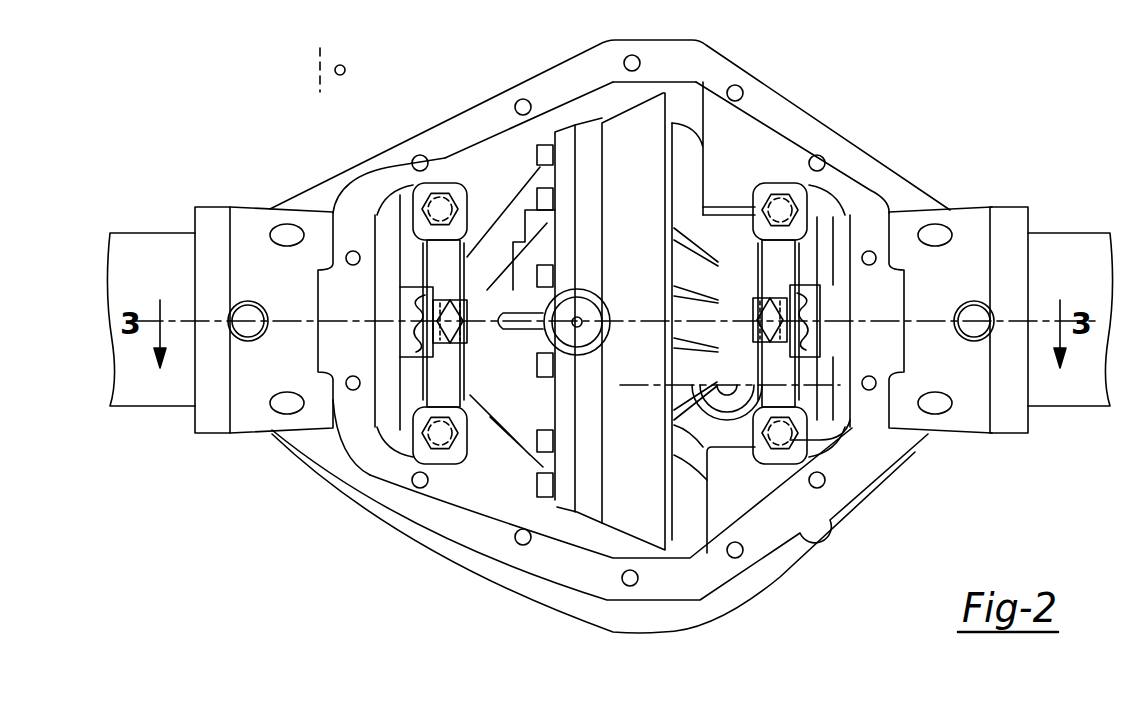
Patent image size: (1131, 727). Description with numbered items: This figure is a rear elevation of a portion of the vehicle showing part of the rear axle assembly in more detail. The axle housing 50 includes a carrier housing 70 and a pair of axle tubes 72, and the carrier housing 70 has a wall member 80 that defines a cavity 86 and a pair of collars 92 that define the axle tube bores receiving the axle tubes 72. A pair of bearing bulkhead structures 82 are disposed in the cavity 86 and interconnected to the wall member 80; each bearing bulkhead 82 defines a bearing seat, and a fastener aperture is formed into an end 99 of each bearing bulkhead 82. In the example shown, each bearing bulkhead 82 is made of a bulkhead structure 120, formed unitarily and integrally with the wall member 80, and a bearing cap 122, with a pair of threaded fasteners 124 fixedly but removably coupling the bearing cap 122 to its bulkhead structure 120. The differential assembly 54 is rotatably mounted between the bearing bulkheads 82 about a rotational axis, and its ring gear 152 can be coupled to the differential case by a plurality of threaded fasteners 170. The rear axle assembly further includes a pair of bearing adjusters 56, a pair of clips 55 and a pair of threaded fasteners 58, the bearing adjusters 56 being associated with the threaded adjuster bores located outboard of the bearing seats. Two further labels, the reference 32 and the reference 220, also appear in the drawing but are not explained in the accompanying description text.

The axle assembly 32 is at (848, 40).
The axle housing 50 is at (355, 165).
The differential assembly 54 is at (513, 217).
The clips 55 is at (443, 335).
The bearing adjusters 56 is at (407, 342).
The threaded fasteners 58 is at (443, 317).
The carrier housing 70 is at (827, 138).
The axle tubes 72 is at (166, 246).
The wall member 80 is at (713, 63).
The bearing bulkhead structures 82 is at (438, 208).
The cavity 86 is at (505, 490).
The collars 92 is at (217, 212).
The end of bearing bulkhead 99 is at (770, 277).
The bulkhead structure 120 is at (413, 417).
The bearing cap 122 is at (450, 393).
The threaded fasteners 124 is at (433, 213).
The ring gear 152 is at (647, 528).
The threaded fasteners 170 is at (545, 482).
The pinion bearing 220 is at (780, 447).